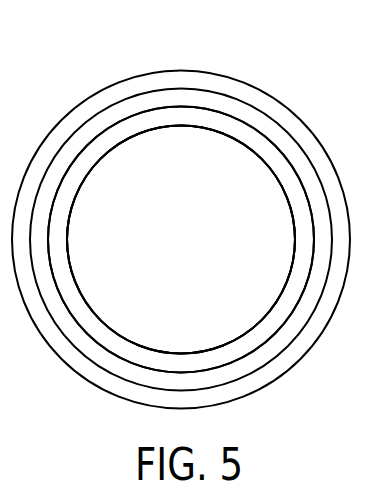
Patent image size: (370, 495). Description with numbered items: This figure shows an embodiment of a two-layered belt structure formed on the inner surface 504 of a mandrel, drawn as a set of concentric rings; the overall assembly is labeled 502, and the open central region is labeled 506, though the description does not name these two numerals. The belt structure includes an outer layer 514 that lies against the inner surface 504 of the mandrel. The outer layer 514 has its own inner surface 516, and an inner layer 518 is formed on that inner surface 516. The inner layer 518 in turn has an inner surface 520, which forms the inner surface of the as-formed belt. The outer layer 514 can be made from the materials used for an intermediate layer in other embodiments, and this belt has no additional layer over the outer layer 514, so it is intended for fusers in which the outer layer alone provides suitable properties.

The ring assembly 502 is at (263, 84).
The inner surface 504 is at (206, 87).
The central opening 506 is at (142, 323).
The outer layer 514 is at (139, 102).
The inner surface 516 is at (266, 341).
The inner layer 518 is at (220, 356).
The inner surface 520 is at (148, 132).